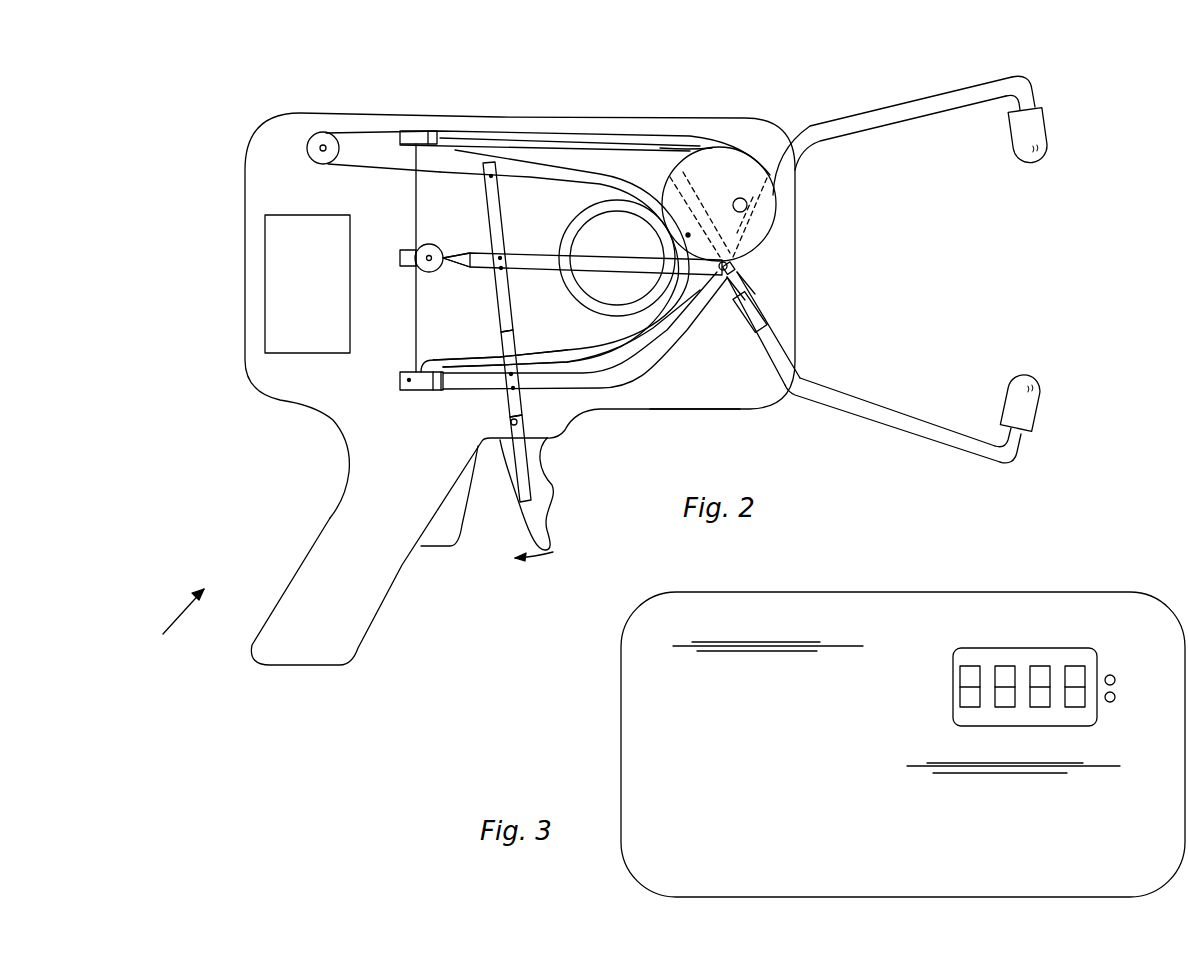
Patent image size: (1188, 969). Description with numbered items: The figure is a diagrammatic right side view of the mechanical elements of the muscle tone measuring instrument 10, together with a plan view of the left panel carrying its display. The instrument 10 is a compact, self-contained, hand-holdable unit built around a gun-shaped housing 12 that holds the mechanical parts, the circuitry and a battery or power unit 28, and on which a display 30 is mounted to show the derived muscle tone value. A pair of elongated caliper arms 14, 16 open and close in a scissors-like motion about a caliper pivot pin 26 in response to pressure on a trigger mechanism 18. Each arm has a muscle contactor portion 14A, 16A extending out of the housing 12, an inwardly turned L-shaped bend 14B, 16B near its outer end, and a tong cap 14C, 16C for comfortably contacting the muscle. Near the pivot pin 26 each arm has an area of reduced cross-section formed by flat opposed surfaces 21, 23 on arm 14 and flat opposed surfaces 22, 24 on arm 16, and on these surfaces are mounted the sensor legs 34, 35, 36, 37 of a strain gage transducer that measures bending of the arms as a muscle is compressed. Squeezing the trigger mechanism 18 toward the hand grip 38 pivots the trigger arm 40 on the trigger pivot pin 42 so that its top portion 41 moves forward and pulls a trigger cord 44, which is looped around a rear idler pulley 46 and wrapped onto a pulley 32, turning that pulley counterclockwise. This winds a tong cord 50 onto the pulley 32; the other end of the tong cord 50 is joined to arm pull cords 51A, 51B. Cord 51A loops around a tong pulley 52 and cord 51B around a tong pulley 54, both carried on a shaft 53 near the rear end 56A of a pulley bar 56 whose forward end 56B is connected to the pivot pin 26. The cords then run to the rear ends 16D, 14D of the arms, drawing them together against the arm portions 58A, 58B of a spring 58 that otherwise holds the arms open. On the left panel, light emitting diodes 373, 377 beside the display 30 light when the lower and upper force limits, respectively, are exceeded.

In FIG. 2, the instrument 10 is at (173, 617).
In FIG. 2, the housing 12 is at (335, 427).
In FIG. 2, the caliper arm 14 is at (961, 125).
In FIG. 2, the muscle contactor portion 14A is at (895, 103).
In FIG. 2, the L-shaped bend 14B is at (1028, 80).
In FIG. 2, the tong cap 14C is at (1050, 150).
In FIG. 2, the rear end of caliper arm 14D is at (420, 368).
In FIG. 2, the caliper arm 16 is at (953, 418).
In FIG. 2, the muscle contactor portion 16A is at (897, 438).
In FIG. 2, the L-shaped bend 16B is at (1012, 462).
In FIG. 2, the tong cap 16C is at (1046, 382).
In FIG. 2, the rear end of caliper arm 16D is at (433, 131).
In FIG. 2, the trigger mechanism 18 is at (556, 526).
In FIG. 2, the flat surface 21 is at (752, 217).
In FIG. 2, the flat surface 22 is at (790, 322).
In FIG. 2, the flat surface 23 is at (748, 178).
In FIG. 2, the flat surface 24 is at (748, 333).
In FIG. 2, the caliper pivot pin 26 is at (720, 292).
In FIG. 2, the battery or power unit 28 is at (300, 296).
In FIG. 3, the display 30 is at (945, 715).
In FIG. 2, the pulley 32 is at (690, 148).
In FIG. 2, the sensor leg 34 is at (693, 411).
In FIG. 2, the sensor leg 35 is at (760, 230).
In FIG. 2, the sensor leg 36 is at (768, 296).
In FIG. 2, the sensor leg 37 is at (735, 200).
In FIG. 2, the hand grip 38 is at (405, 598).
In FIG. 2, the trigger arm 40 is at (520, 470).
In FIG. 2, the top portion of trigger arm 41 is at (498, 198).
In FIG. 2, the trigger pivot pin 42 is at (475, 418).
In FIG. 2, the trigger cord 44 is at (372, 168).
In FIG. 2, the rear idler pulley 46 is at (324, 132).
In FIG. 2, the tong cord 50 is at (530, 254).
In FIG. 2, the arm pull cord 51A is at (412, 225).
In FIG. 2, the arm pull cord 51B is at (402, 373).
In FIG. 2, the tong pulley 52 is at (428, 273).
In FIG. 2, the shaft 53 is at (430, 255).
In FIG. 2, the tong pulley 54 is at (440, 278).
In FIG. 2, the pulley bar 56 is at (542, 270).
In FIG. 2, the rear end of pulley bar 56A is at (398, 262).
In FIG. 2, the forward end of pulley bar 56B is at (745, 268).
In FIG. 2, the spring 58 is at (592, 190).
In FIG. 2, the spring arm portion 58A is at (510, 144).
In FIG. 2, the spring arm portion 58B is at (615, 350).
In FIG. 3, the light emitting diode 373 is at (1110, 702).
In FIG. 3, the light emitting diode 377 is at (1110, 675).